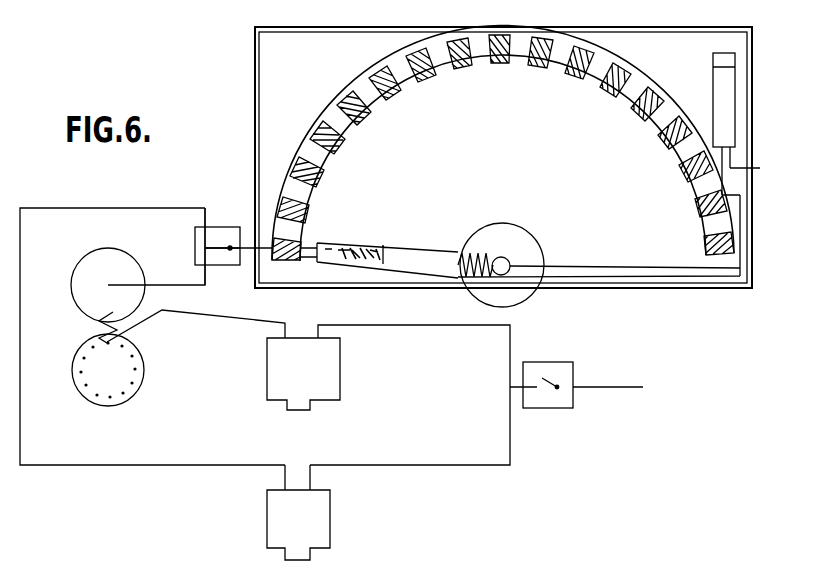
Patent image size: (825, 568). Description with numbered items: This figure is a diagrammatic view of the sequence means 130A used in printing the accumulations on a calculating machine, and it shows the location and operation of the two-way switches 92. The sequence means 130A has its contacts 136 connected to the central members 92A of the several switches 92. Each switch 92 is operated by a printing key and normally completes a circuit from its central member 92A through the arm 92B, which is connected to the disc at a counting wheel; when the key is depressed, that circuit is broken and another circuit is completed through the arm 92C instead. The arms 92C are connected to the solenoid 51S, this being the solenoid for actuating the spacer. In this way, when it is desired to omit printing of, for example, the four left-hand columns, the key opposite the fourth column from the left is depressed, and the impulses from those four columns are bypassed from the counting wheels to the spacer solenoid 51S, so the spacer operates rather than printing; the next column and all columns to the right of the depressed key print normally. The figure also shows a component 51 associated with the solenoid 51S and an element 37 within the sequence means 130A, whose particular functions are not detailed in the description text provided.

The sequence means 130A is at (627, 290).
The contacts 136 is at (600, 84).
The temperature sensing element 37 is at (727, 103).
The two-way switch 92 is at (213, 228).
The central member 92A is at (223, 247).
The arm 92B is at (206, 267).
The arm 92C is at (196, 218).
The control unit 51 is at (303, 374).
The solenoid 51S is at (298, 512).